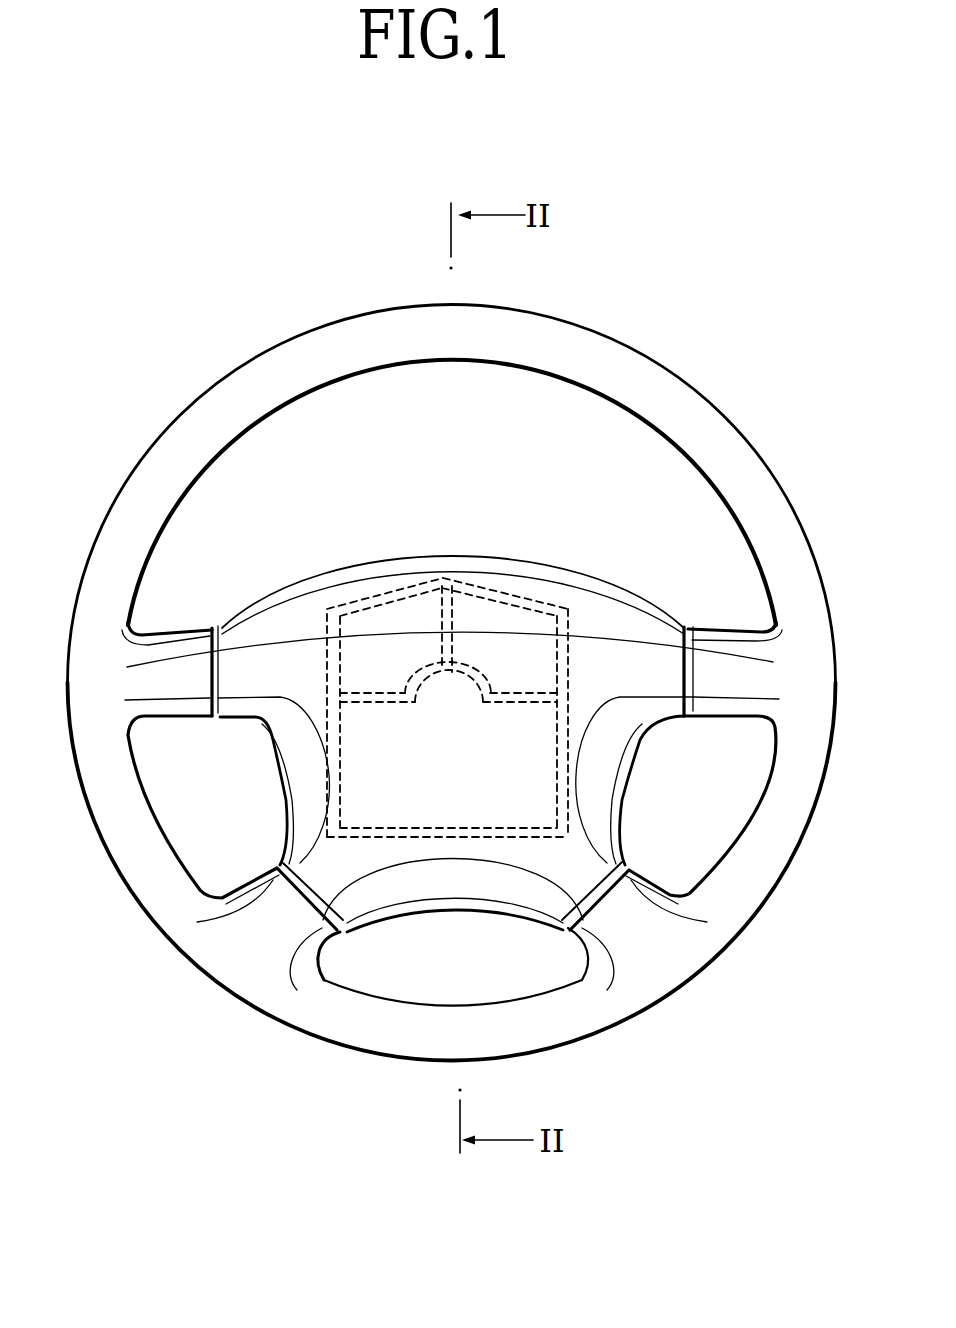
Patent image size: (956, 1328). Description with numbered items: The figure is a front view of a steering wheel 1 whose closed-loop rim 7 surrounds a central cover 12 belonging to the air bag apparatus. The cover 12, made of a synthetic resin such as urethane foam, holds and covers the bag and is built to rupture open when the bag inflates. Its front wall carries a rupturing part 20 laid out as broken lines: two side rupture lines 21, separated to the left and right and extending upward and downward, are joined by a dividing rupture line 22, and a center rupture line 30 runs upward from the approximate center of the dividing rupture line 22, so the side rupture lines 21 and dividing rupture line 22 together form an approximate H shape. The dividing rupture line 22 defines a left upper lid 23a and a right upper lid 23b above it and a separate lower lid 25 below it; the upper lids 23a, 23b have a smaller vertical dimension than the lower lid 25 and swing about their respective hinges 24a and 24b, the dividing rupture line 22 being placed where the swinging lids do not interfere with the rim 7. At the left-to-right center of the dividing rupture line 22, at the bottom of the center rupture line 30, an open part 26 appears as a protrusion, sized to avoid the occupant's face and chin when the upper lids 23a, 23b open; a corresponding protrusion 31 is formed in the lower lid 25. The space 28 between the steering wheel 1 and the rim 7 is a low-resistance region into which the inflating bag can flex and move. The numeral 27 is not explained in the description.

The steering wheel 1 is at (676, 334).
The rim 7 is at (318, 322).
The cover 12 is at (646, 748).
The rupturing part 20 is at (546, 753).
The side rupture lines 21 is at (320, 679).
The dividing rupture line 22 is at (379, 708).
The left upper lid 23a is at (343, 607).
The right upper lid 23b is at (493, 607).
The hinge 24a is at (402, 587).
The hinge 24b is at (538, 600).
The lower lid 25 is at (523, 842).
The open part 26 is at (481, 692).
The lower mounting portion 27 is at (408, 842).
The space 28 is at (414, 424).
The center rupture line 30 is at (442, 588).
The protrusion 31 is at (445, 672).